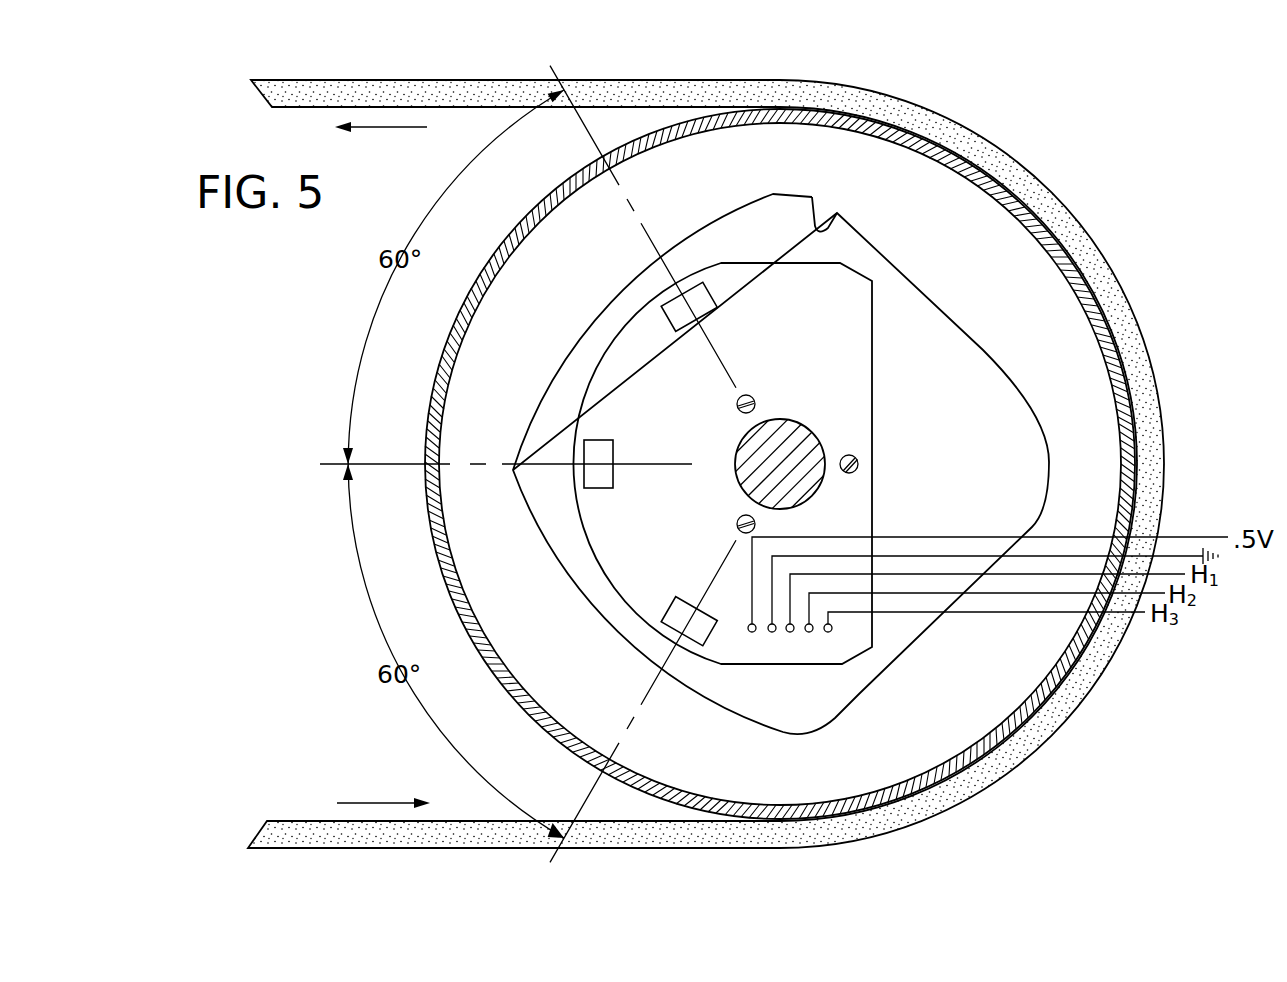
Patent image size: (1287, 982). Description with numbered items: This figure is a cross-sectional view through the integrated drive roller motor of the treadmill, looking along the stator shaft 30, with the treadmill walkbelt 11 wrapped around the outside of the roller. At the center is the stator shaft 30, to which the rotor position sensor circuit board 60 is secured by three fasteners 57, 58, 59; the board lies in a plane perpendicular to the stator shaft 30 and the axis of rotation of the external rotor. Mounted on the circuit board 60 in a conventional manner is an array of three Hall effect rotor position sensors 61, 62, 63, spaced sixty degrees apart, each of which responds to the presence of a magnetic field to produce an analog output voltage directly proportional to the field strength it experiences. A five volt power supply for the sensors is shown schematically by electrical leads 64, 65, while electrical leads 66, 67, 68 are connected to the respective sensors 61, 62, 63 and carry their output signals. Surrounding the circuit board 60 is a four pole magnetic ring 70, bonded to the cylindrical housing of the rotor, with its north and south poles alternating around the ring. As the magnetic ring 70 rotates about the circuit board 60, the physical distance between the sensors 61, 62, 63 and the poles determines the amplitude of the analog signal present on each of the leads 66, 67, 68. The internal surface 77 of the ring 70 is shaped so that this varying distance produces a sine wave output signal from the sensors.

The treadmill walkbelt 11 is at (372, 90).
The stator shaft 30 is at (813, 437).
The fastener 57 is at (750, 393).
The fastener 58 is at (743, 513).
The fastener 59 is at (851, 456).
The rotor position sensor circuit board 60 is at (846, 316).
The Hall effect rotor position sensor 61 is at (692, 598).
The Hall effect rotor position sensor 62 is at (603, 440).
The Hall effect rotor position sensor 63 is at (711, 318).
The electrical lead 64 is at (948, 537).
The electrical lead 65 is at (982, 575).
The electrical lead 66 is at (1015, 574).
The electrical lead 67 is at (978, 593).
The electrical lead 68 is at (923, 613).
The four pole magnetic ring 70 is at (950, 223).
The internal surface 77 is at (836, 214).